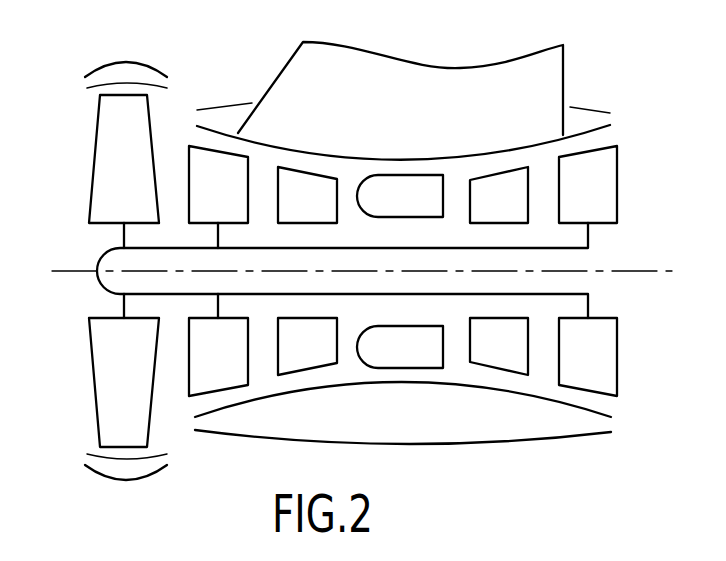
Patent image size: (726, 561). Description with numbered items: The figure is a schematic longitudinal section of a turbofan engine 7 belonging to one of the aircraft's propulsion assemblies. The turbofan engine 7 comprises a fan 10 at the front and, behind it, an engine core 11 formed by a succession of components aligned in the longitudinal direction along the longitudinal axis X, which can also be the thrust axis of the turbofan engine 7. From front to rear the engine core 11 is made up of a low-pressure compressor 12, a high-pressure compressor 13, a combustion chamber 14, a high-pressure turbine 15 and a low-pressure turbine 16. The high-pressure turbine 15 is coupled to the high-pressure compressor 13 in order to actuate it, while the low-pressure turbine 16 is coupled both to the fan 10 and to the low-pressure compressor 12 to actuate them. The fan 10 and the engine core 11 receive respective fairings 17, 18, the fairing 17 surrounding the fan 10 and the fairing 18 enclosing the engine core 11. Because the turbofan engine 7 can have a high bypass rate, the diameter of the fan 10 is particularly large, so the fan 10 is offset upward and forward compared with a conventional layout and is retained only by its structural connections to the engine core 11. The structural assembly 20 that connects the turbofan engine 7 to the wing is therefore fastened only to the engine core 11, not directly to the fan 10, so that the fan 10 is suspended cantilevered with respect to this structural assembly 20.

The turbofan engine 7 is at (552, 463).
The fan 10 is at (111, 150).
The engine core 11 is at (418, 388).
The low-pressure compressor 12 is at (220, 173).
The high-pressure compressor 13 is at (308, 192).
The combustion chamber 14 is at (405, 190).
The high-pressure turbine 15 is at (502, 187).
The low-pressure turbine 16 is at (604, 182).
The fairing 17 is at (125, 62).
The fairing 18 is at (503, 440).
The structural assembly 20 is at (295, 75).
The longitudinal axis X is at (354, 271).